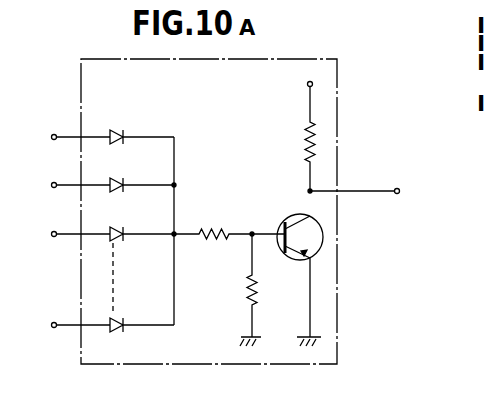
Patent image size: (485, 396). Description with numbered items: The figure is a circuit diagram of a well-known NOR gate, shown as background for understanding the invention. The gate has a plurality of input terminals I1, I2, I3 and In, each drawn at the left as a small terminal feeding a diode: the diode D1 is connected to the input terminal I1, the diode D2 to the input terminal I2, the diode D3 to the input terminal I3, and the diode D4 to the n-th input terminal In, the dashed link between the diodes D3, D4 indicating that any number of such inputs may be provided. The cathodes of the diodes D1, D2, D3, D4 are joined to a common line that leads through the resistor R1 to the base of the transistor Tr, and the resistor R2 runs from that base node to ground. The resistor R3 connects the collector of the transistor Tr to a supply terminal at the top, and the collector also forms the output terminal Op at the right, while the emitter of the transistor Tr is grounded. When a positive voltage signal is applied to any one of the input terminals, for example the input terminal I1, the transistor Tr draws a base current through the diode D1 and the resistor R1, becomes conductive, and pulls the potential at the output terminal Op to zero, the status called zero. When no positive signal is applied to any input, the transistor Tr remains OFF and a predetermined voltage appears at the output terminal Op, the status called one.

The input terminal I1 is at (70, 138).
The input terminal I2 is at (70, 186).
The input terminal I3 is at (70, 235).
The input terminal In is at (70, 326).
The diode D1 is at (115, 130).
The diode D2 is at (115, 178).
The diode D3 is at (115, 227).
The diode D4 is at (115, 318).
The resistor R1 is at (209, 223).
The resistor R2 is at (246, 291).
The resistor R3 is at (305, 140).
The transistor Tr is at (282, 226).
The output terminal Op is at (375, 192).